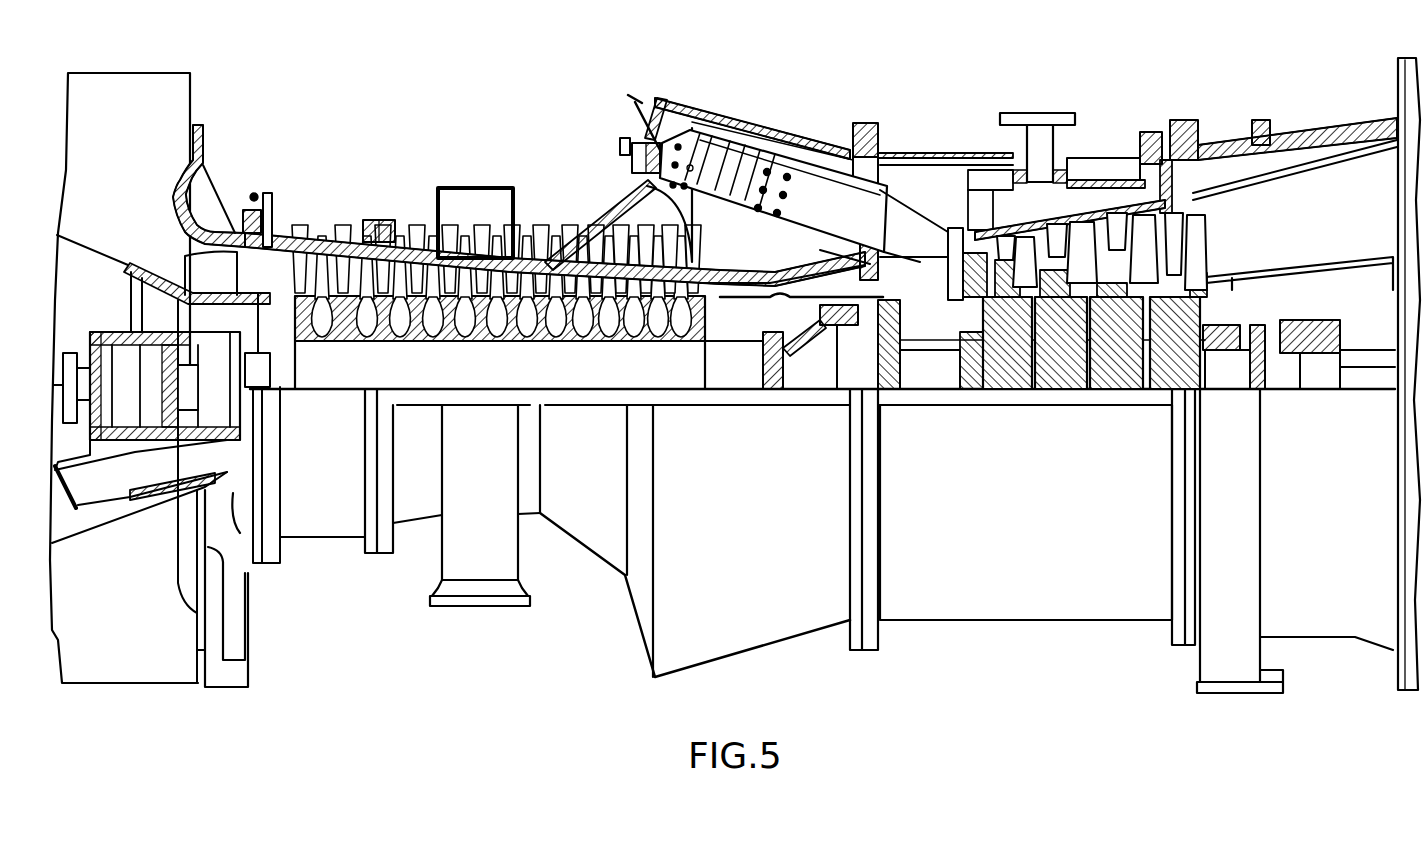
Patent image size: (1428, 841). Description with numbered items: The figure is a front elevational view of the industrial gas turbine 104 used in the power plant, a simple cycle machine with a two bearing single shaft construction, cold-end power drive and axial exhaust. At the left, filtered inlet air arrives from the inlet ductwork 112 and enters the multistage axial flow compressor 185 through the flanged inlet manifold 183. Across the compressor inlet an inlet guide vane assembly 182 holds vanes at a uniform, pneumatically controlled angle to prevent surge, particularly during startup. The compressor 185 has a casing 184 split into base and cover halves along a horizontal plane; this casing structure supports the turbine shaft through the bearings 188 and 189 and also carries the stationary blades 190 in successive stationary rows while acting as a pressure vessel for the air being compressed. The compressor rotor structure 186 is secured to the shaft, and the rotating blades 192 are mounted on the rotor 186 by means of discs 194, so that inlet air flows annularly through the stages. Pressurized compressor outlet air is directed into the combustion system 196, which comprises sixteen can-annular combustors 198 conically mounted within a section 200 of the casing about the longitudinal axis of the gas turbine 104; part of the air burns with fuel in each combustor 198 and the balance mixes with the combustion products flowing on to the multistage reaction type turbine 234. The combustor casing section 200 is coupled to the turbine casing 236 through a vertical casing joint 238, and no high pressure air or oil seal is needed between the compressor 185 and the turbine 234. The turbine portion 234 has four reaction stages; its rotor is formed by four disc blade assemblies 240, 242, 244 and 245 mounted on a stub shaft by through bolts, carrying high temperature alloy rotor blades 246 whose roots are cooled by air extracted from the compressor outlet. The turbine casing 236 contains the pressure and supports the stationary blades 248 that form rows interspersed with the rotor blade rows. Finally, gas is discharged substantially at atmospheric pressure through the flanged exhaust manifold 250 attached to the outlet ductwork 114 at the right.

The gas turbine 104 is at (807, 698).
The inlet ductwork 112 is at (125, 72).
The outlet ductwork 114 is at (1398, 58).
The inlet guide vane assembly 182 is at (246, 195).
The flanged inlet manifold 183 is at (195, 135).
The compressor casing 184 is at (403, 240).
The multistage axial flow compressor 185 is at (536, 250).
The compressor rotor structure 186 is at (482, 392).
The bearing 188 is at (107, 332).
The bearing 189 is at (1320, 390).
The stationary blades 190 is at (338, 250).
The blades 192 is at (296, 246).
The discs 194 is at (407, 343).
The combustion system 196 is at (723, 117).
The can-annular combustors 198 is at (808, 185).
The combustor casing section 200 is at (745, 655).
The multistage reaction type turbine 234 is at (1222, 220).
The turbine casing 236 is at (1020, 622).
The vertical casing joint 238 is at (870, 655).
The disc blade assembly 240 is at (1005, 392).
The disc blade assembly 242 is at (1048, 392).
The disc blade assembly 244 is at (1118, 392).
The disc blade assembly 245 is at (1162, 392).
The rotor blades 246 is at (1123, 185).
The stationary blades 248 is at (1057, 200).
The flanged exhaust manifold 250 is at (1323, 130).